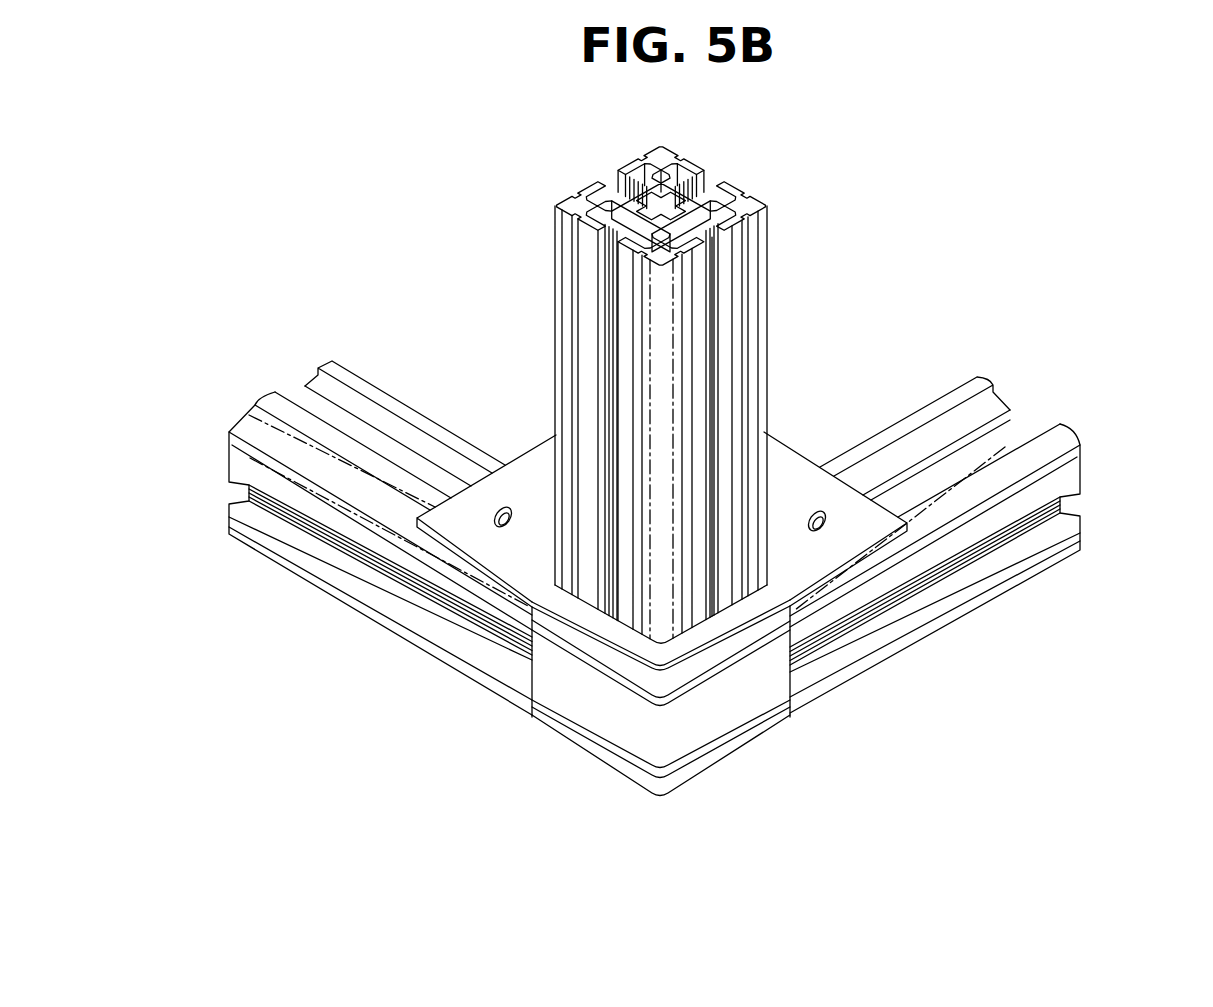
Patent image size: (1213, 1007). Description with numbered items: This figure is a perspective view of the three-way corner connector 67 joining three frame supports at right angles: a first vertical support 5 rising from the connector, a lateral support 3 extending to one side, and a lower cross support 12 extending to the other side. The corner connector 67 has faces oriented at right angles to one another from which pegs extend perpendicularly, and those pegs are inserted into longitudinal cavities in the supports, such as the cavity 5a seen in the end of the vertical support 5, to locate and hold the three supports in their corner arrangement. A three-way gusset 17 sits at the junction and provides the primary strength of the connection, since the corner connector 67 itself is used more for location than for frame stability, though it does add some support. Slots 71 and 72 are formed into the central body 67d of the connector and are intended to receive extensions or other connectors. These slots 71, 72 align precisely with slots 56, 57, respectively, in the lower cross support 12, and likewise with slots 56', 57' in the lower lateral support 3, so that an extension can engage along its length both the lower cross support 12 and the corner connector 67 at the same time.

The first vertical support 5 is at (777, 241).
The longitudinal cavity 5a is at (657, 199).
The lateral support 3 is at (213, 594).
The lower cross support 12 is at (1119, 613).
The three-way gusset 17 is at (496, 503).
The slot 56 is at (935, 538).
The slot 56' is at (380, 516).
The slot 57 is at (935, 609).
The slot 57' is at (380, 603).
The three-way corner connector 67 is at (604, 799).
The central body 67d is at (580, 708).
The slot 71 is at (731, 673).
The slot 72 is at (699, 763).